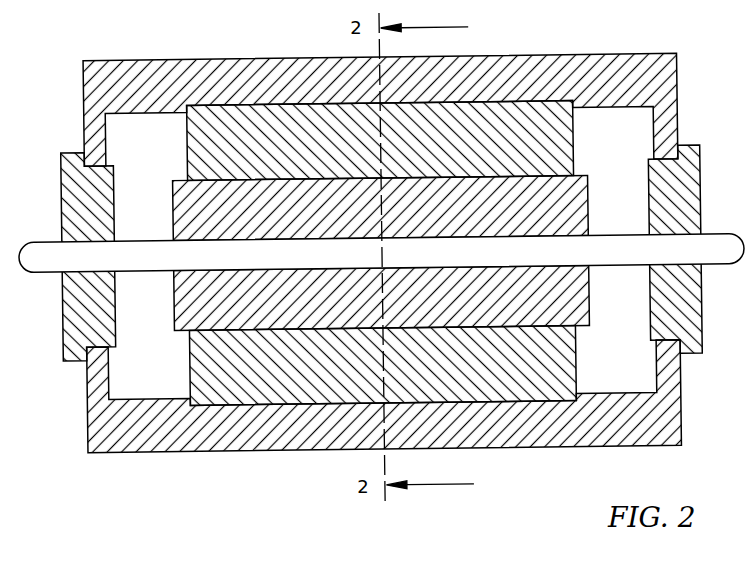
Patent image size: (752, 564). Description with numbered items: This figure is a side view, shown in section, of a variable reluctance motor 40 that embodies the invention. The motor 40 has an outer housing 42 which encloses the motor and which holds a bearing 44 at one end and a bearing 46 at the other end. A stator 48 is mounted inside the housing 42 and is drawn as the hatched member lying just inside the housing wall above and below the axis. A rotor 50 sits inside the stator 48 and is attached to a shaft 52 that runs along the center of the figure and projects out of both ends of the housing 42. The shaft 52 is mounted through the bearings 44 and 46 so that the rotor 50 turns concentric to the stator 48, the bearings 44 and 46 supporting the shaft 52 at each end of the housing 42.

The motor 40 is at (381, 277).
The outer housing 42 is at (625, 427).
The bearing 44 is at (70, 305).
The bearing 46 is at (697, 297).
The stator 48 is at (504, 145).
The rotor 50 is at (504, 219).
The shaft 52 is at (629, 259).